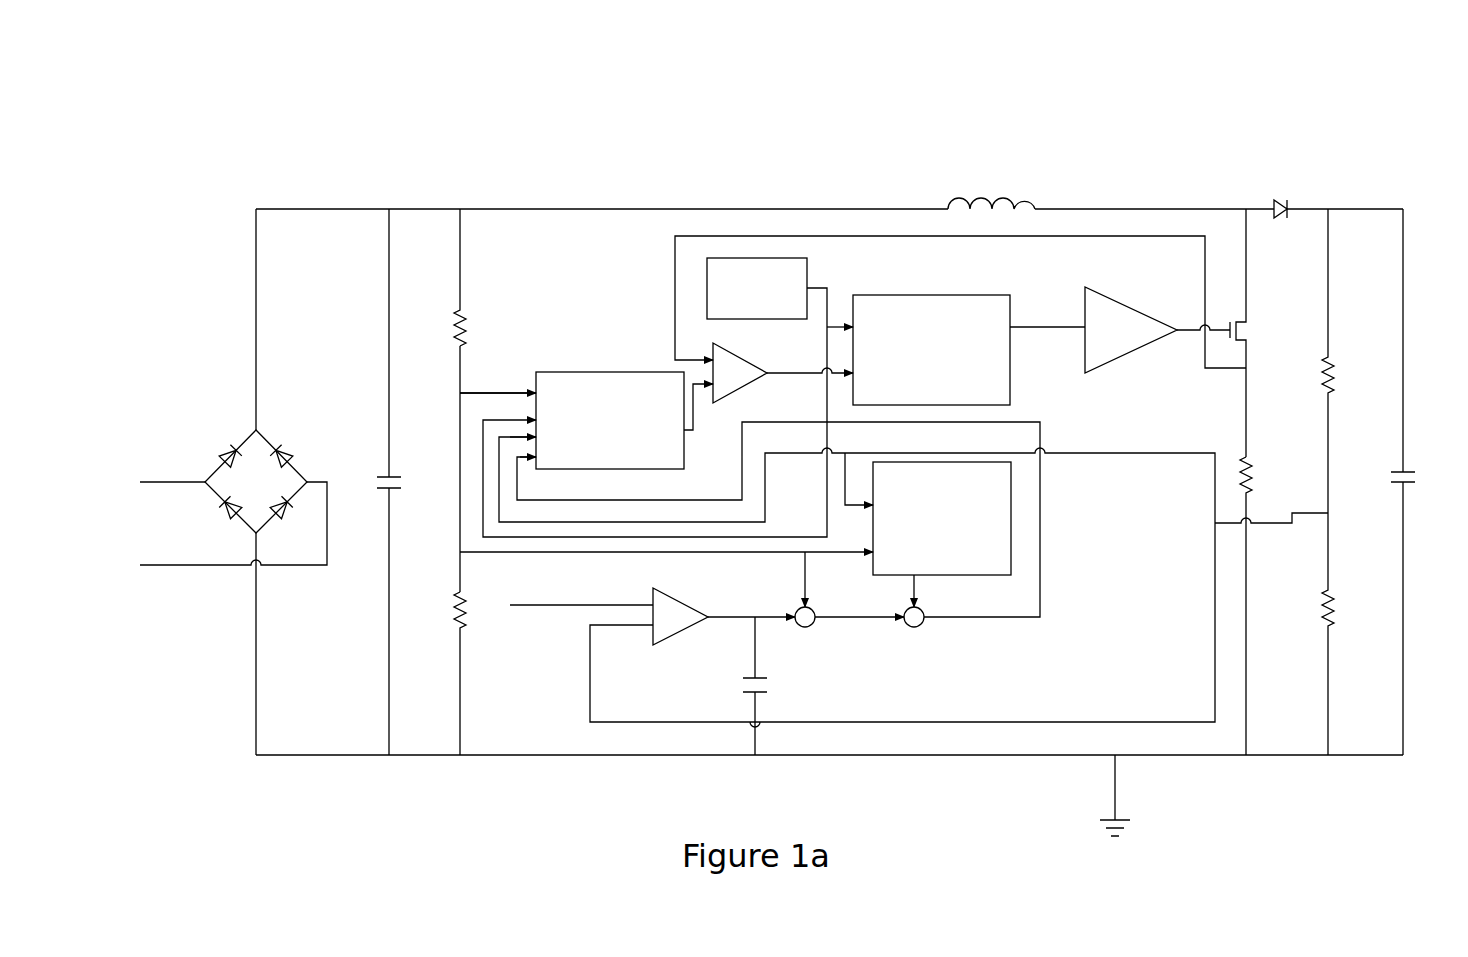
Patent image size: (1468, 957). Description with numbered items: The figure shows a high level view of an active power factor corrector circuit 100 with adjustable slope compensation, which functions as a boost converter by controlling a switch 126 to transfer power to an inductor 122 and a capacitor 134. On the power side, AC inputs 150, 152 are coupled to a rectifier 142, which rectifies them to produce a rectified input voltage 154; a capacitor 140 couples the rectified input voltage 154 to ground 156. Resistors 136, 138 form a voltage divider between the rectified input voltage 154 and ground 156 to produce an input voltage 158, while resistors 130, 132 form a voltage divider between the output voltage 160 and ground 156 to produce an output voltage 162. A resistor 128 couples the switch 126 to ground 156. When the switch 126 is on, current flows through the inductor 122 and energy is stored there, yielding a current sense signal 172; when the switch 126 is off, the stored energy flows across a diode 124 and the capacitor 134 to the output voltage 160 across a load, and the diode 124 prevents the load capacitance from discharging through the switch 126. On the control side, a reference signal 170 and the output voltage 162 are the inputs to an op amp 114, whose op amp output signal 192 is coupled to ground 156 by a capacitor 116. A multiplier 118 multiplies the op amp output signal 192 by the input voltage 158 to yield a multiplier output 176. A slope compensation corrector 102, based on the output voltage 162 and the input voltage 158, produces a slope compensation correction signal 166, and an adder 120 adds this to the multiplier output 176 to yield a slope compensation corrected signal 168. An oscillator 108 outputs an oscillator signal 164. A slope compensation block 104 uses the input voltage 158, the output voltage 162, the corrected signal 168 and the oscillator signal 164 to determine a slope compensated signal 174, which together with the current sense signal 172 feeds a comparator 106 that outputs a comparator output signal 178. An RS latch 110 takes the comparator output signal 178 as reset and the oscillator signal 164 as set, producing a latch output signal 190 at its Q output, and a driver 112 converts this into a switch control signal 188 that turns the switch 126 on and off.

The active power factor corrector circuit 100 is at (368, 180).
The slope compensation corrector 102 is at (942, 518).
The slope compensation block 104 is at (610, 420).
The comparator 106 is at (737, 366).
The oscillator 108 is at (757, 288).
The RS latch 110 is at (931, 350).
The driver 112 is at (1100, 293).
The op amp 114 is at (685, 630).
The capacitor 116 is at (762, 675).
The multiplier 118 is at (805, 630).
The adder 120 is at (918, 633).
The inductor 122 is at (1022, 200).
The diode 124 is at (1280, 207).
The switch 126 is at (1250, 330).
The resistor 128 is at (1258, 475).
The resistor 130 is at (1338, 372).
The resistor 132 is at (1320, 615).
The capacitor 134 is at (1415, 478).
The resistor 136 is at (466, 322).
The resistor 138 is at (470, 608).
The capacitor 140 is at (380, 480).
The rectifier 142 is at (228, 445).
The input 150 is at (185, 482).
The input 152 is at (188, 568).
The rectified input voltage 154 is at (500, 209).
The ground 156 is at (308, 760).
The input voltage 158 is at (460, 495).
The output voltage 160 is at (1357, 207).
The output voltage 162 is at (1333, 412).
The oscillator signal 164 is at (817, 283).
The slope compensation correction signal 166 is at (922, 588).
The slope compensation corrected signal 168 is at (1045, 545).
The reference signal 170 is at (565, 605).
The current sense signal 172 is at (1246, 400).
The slope compensated signal 174 is at (695, 407).
The multiplier output 176 is at (870, 622).
The comparator output signal 178 is at (790, 376).
The switch control signal 188 is at (1190, 336).
The latch output signal 190 is at (1058, 327).
The op amp output signal 192 is at (752, 612).